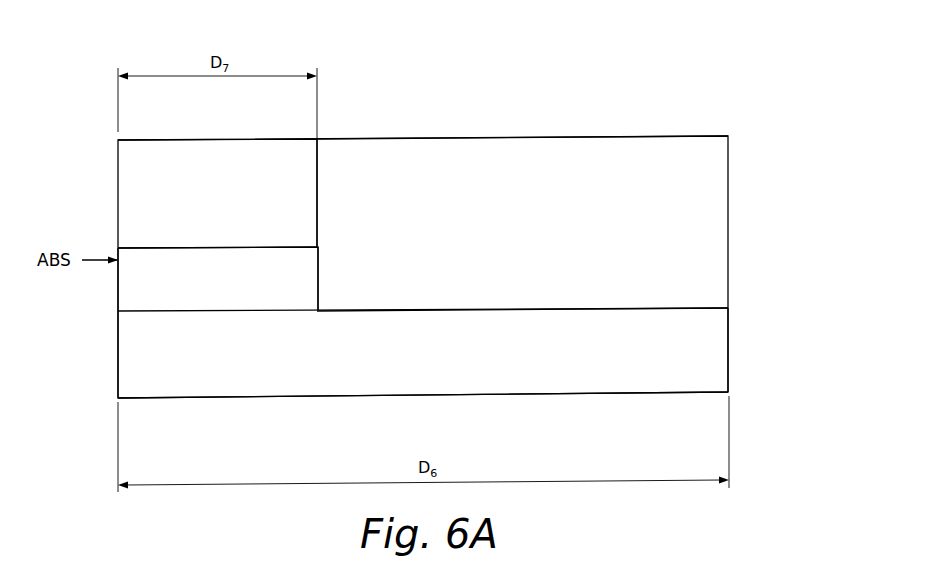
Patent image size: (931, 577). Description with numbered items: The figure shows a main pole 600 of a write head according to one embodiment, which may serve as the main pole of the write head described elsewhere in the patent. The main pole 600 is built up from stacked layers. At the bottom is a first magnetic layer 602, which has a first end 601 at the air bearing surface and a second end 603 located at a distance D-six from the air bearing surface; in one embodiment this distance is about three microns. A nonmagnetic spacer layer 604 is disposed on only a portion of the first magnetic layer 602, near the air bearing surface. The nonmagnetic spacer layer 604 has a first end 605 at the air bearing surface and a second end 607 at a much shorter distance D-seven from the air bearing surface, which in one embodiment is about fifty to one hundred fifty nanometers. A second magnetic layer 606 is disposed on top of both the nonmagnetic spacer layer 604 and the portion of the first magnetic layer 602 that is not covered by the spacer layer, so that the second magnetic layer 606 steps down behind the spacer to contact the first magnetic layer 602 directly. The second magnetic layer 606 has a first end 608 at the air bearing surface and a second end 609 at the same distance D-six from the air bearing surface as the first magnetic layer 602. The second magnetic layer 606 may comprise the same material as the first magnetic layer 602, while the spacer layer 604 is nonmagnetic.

The main pole 600 is at (641, 46).
The first end 601 is at (120, 338).
The first magnetic layer 602 is at (429, 360).
The second end 603 is at (729, 350).
The nonmagnetic spacer layer 604 is at (245, 293).
The first end 605 is at (120, 282).
The second magnetic layer 606 is at (429, 210).
The second end 607 is at (319, 280).
The first end 608 is at (120, 194).
The second end 609 is at (729, 213).